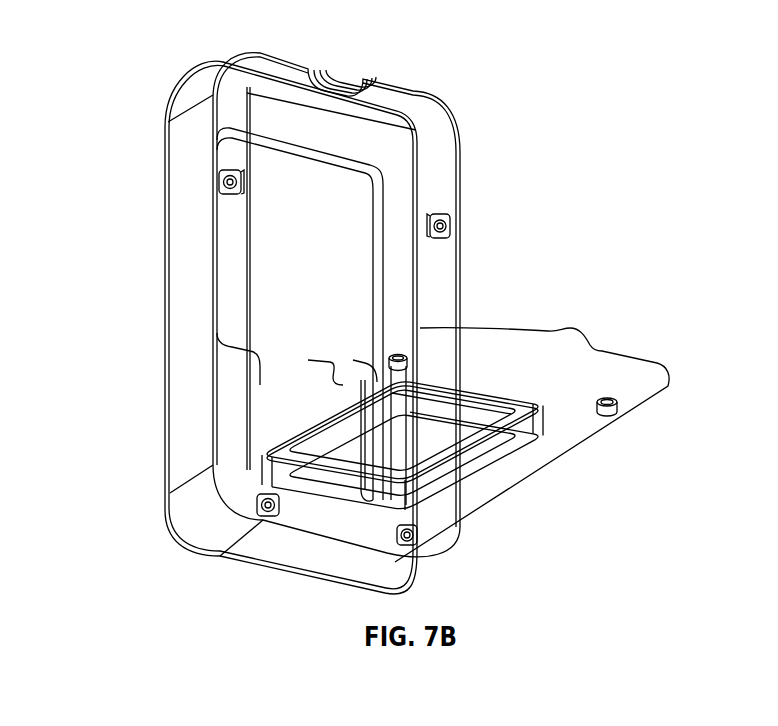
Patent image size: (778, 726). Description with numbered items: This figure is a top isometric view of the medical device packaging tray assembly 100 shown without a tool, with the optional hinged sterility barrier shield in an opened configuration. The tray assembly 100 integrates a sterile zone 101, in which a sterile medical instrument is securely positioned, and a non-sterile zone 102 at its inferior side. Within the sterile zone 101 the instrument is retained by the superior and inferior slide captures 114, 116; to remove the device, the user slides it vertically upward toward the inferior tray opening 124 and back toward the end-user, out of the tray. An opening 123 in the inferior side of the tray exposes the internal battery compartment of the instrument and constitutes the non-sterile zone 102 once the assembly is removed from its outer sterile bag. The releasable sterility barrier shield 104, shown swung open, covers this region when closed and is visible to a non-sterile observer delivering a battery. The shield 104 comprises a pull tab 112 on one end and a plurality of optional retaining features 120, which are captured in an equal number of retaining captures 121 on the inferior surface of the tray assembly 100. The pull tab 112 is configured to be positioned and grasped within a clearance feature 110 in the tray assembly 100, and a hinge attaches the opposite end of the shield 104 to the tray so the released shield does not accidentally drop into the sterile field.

The medical device packaging tray assembly 100 is at (118, 70).
The sterile zone 101 is at (193, 152).
The clearance feature 110 is at (340, 92).
The inferior tray opening 124 is at (330, 214).
The retaining capture 121 is at (455, 221).
The superior slide capture 114 is at (263, 352).
The inferior slide capture 116 is at (451, 403).
The pull tab 112 is at (511, 406).
The releasable sterility barrier shield 104 is at (633, 377).
The retaining feature 120 is at (619, 407).
The opening 123 is at (470, 443).
The non-sterile zone 102 is at (462, 438).